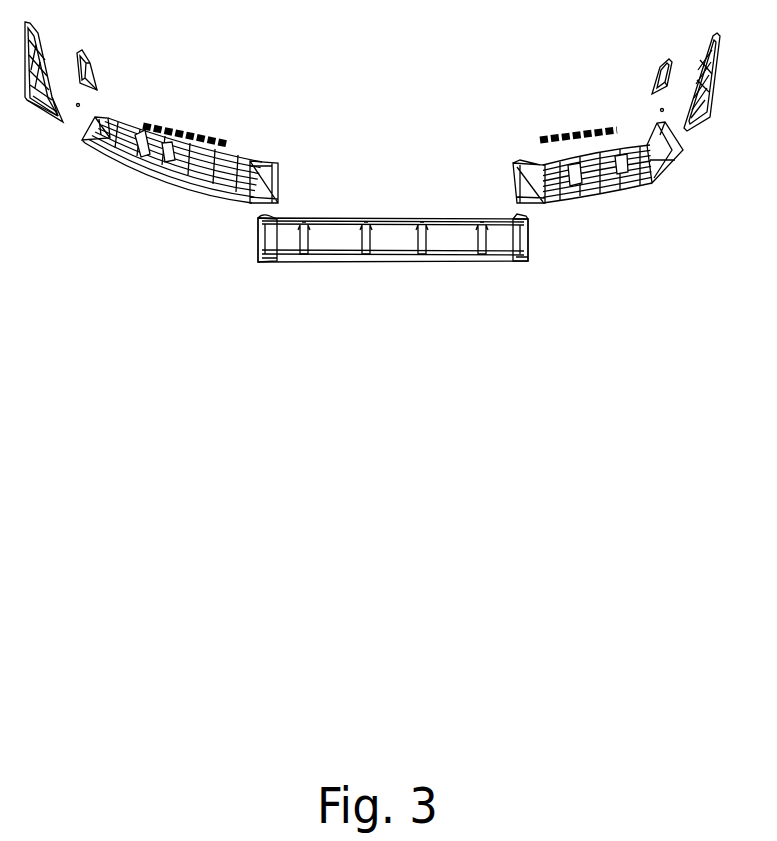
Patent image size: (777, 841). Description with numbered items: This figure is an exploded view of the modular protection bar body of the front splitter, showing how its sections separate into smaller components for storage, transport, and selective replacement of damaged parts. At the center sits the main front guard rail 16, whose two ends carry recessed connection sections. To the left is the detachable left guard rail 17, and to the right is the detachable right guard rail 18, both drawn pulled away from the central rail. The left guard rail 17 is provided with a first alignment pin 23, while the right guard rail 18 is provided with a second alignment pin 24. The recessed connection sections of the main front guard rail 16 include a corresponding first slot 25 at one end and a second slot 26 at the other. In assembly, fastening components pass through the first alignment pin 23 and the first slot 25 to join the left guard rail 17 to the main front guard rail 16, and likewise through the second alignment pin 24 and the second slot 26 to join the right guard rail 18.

The main front guard rail 16 is at (387, 262).
The detachable left guard rail 17 is at (89, 150).
The detachable right guard rail 18 is at (670, 168).
The first alignment pin 23 is at (263, 157).
The second alignment pin 24 is at (513, 162).
The first slot 25 is at (257, 237).
The second slot 26 is at (528, 240).